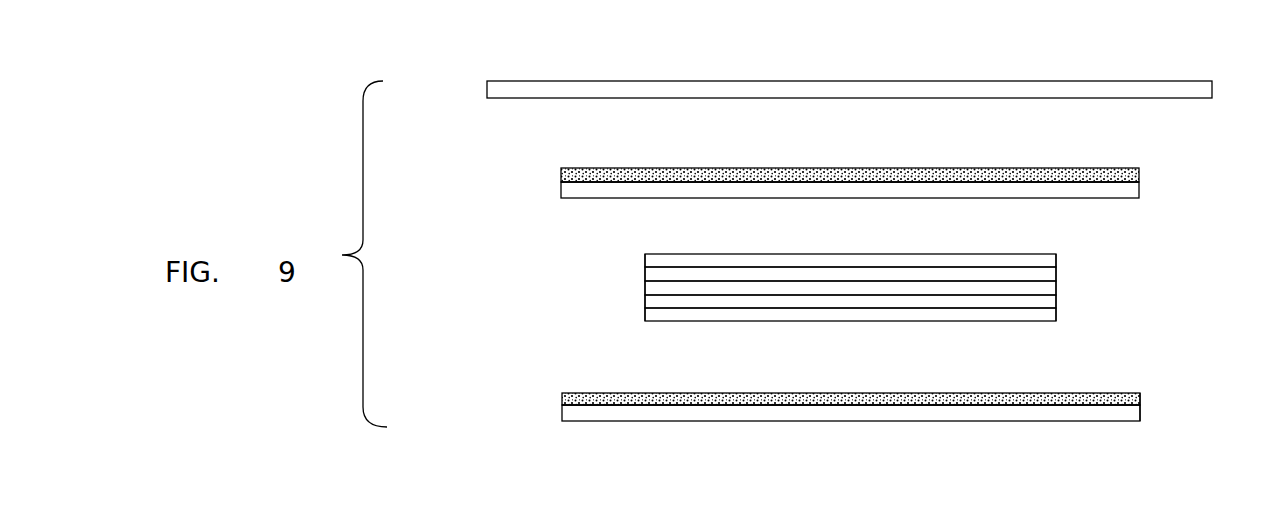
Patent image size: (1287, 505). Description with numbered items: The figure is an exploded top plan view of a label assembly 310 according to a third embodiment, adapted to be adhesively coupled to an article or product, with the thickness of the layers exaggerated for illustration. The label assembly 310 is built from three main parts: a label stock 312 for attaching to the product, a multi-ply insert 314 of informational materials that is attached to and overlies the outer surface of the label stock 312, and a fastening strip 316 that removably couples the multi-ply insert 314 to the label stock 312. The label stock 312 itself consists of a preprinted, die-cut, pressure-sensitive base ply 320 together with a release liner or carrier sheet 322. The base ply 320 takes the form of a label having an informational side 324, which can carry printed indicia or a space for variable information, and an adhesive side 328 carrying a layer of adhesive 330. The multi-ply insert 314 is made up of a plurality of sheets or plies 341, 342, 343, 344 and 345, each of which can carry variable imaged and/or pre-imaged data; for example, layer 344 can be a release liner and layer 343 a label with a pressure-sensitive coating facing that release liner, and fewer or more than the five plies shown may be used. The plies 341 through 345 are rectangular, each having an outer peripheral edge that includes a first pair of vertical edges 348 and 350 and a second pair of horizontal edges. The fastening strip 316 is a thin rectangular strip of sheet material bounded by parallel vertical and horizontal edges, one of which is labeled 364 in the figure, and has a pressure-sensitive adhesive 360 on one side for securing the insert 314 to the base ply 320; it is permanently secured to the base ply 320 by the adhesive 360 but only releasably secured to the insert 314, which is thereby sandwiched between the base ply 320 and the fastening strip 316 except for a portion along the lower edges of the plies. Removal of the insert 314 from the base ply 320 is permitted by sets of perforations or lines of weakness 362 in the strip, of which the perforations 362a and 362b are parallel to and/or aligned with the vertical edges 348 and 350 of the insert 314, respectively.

The label assembly 310 is at (593, 72).
The label stock 312 is at (545, 198).
The multi-ply insert 314 is at (640, 298).
The fastening strip 316 is at (838, 422).
The base ply 320 is at (1139, 183).
The release liner 322 is at (1058, 80).
The informational side 324 is at (691, 198).
The adhesive side 328 is at (875, 168).
The layer of adhesive 330 is at (1062, 168).
The ply 341 is at (1056, 311).
The ply 342 is at (1056, 298).
The ply 343 is at (1056, 286).
The ply 344 is at (1056, 273).
The ply 345 is at (1056, 260).
The vertical edge 348 is at (645, 270).
The vertical edge 350 is at (1056, 321).
The pressure-sensitive adhesive 360 is at (587, 394).
The polarizer sheet 362 is at (562, 410).
The perforations 362a is at (645, 406).
The perforations 362b is at (1056, 400).
The edge of lower polarizer 364 is at (1140, 398).